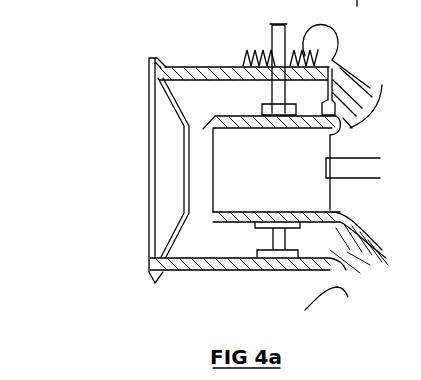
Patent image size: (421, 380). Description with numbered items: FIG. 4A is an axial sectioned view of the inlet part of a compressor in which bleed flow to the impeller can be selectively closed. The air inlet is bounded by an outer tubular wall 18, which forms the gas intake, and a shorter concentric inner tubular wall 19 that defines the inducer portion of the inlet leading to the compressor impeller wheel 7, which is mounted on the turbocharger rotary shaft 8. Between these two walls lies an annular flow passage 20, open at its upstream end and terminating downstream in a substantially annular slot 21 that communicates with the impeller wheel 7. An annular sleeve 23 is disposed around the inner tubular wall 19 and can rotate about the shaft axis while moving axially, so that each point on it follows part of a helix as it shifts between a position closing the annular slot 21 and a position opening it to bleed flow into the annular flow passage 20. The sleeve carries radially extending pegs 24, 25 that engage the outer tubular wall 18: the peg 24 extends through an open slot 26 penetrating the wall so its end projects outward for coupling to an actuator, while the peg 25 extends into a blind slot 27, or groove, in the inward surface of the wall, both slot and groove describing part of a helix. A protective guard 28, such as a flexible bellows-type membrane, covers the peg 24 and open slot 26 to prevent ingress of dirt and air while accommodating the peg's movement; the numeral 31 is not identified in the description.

The compressor impeller wheel 7 is at (362, 192).
The turbocharger rotary shaft 8 is at (367, 165).
The outer tubular wall 18 is at (148, 67).
The inner tubular wall 19 is at (213, 127).
The annular flow passage 20 is at (197, 100).
The annular slot 21 is at (347, 120).
The annular sleeve 23 is at (247, 110).
The peg 24 is at (277, 33).
The peg 25 is at (276, 250).
The open slot 26 is at (295, 63).
The blind slot 27 is at (263, 253).
The protective guard 28 is at (251, 56).
The body 31 is at (357, 64).